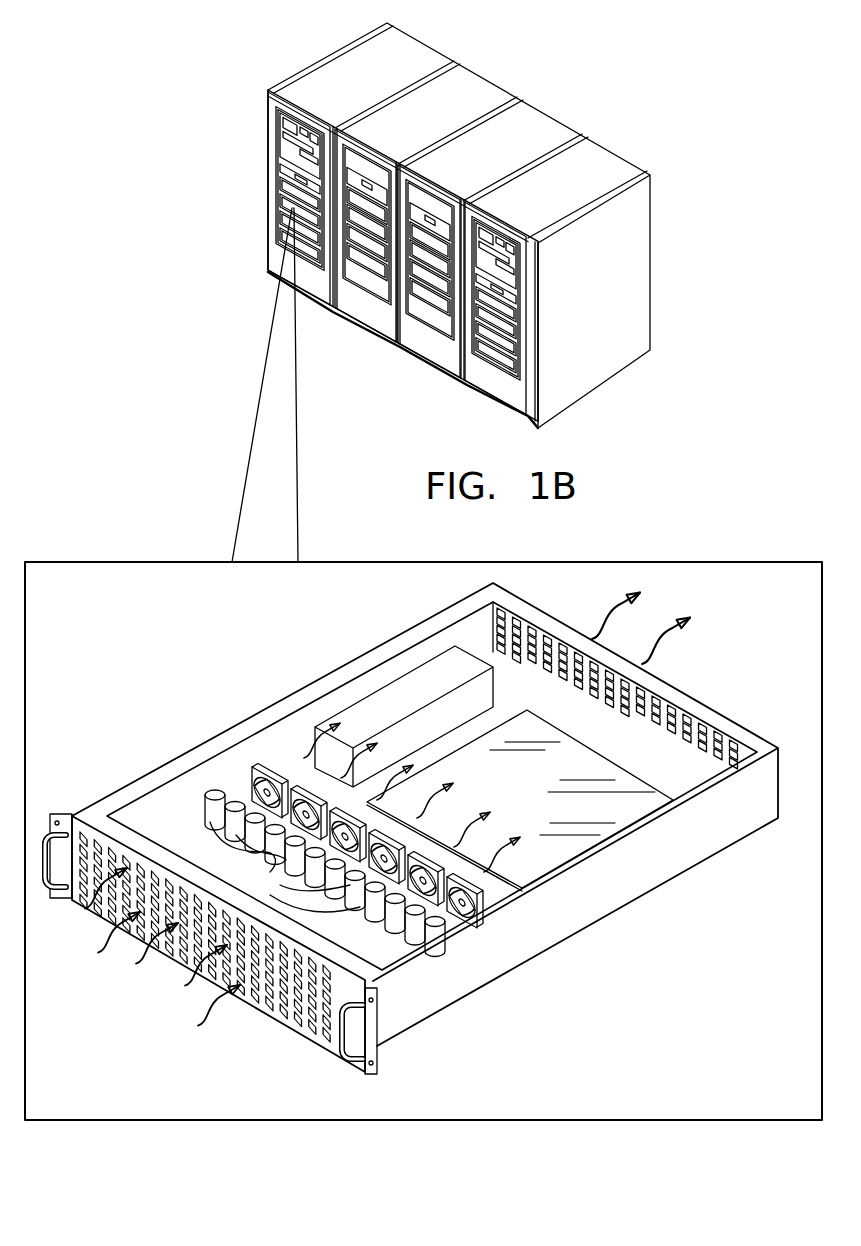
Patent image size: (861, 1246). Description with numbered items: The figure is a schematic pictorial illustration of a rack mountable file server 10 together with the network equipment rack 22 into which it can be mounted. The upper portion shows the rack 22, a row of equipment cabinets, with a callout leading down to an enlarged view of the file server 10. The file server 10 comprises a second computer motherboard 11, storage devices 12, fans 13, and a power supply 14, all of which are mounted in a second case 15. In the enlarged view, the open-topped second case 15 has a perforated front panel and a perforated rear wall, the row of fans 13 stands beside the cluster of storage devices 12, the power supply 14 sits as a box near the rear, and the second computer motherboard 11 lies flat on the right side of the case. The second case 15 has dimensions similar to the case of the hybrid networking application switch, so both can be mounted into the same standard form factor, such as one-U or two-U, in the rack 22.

The rack 22 is at (330, 85).
The file server 10 is at (290, 207).
The second computer motherboard 11 is at (622, 817).
The storage devices 12 is at (373, 912).
The fans 13 is at (253, 790).
The power supply 14 is at (412, 688).
The second case 15 is at (610, 913).